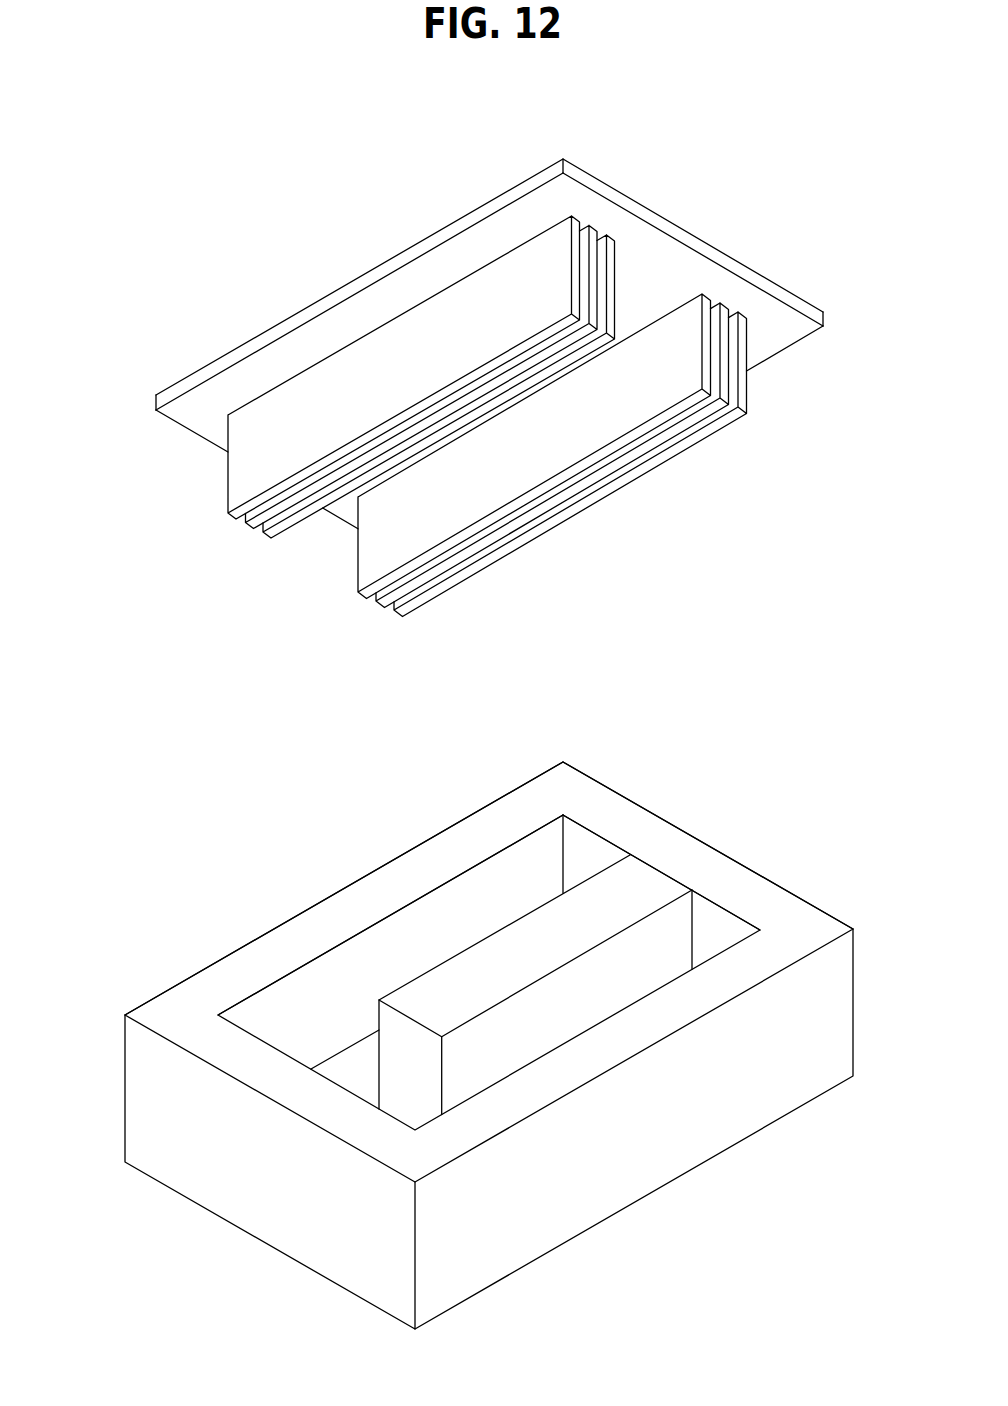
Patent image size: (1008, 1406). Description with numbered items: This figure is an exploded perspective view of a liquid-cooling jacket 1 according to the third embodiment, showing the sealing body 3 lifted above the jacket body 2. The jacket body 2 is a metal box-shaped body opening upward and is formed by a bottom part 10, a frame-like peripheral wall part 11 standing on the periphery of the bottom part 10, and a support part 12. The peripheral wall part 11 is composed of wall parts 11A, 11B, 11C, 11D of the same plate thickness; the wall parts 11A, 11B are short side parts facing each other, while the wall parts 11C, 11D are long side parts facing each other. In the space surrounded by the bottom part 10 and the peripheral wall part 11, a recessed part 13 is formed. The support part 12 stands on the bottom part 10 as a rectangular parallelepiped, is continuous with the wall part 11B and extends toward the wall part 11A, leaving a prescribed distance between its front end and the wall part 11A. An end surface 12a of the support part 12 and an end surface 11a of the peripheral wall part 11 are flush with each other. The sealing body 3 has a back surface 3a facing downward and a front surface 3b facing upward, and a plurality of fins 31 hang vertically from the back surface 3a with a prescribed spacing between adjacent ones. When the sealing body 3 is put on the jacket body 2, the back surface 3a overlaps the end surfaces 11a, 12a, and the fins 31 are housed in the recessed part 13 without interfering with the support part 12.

The liquid-cooling jacket 1 is at (252, 173).
The sealing body 3 is at (477, 185).
The back surface 3a is at (645, 247).
The front surface 3b is at (642, 203).
The fins 31 is at (577, 268).
The jacket body 2 is at (563, 1268).
The bottom part 10 is at (352, 1070).
The peripheral wall part 11 is at (295, 932).
The end surface 11a is at (680, 997).
The wall part 11A is at (293, 1213).
The wall part 11B is at (692, 835).
The wall part 11C is at (378, 867).
The wall part 11D is at (603, 1177).
The support part 12 is at (528, 955).
The end surface 12a is at (528, 955).
The recessed part 13 is at (323, 1007).